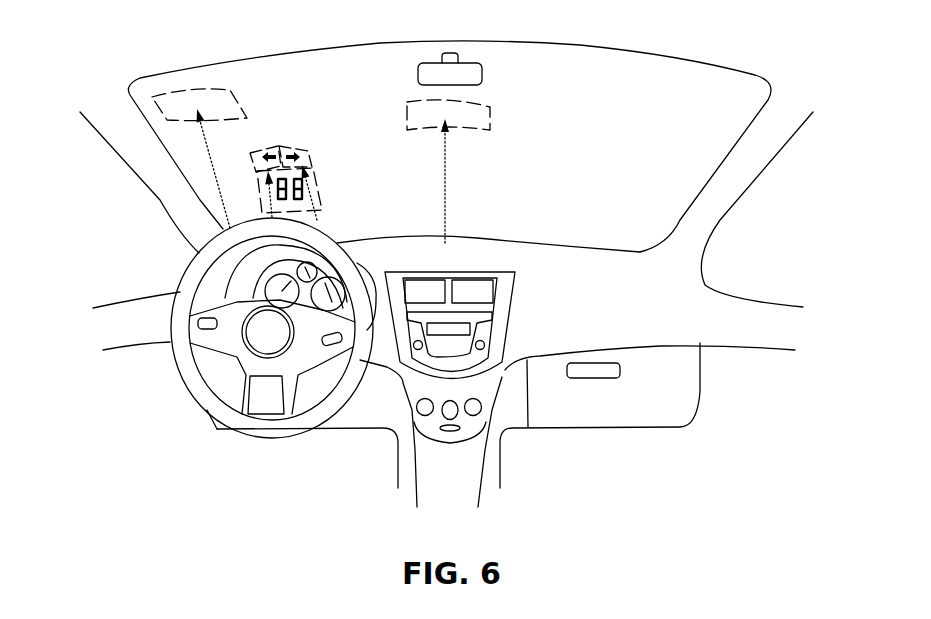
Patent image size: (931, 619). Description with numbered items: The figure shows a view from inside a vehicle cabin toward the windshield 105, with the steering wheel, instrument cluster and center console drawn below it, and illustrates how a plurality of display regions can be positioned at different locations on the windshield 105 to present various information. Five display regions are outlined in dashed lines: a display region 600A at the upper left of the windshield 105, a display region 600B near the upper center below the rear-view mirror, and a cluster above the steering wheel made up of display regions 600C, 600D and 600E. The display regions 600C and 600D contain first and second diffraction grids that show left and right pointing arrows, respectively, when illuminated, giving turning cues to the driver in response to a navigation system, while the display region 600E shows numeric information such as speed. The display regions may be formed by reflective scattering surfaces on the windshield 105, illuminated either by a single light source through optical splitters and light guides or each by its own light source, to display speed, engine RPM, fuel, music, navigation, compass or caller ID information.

The display region 600A is at (236, 96).
The display region 600B is at (490, 110).
The display region 600C is at (262, 146).
The display region 600D is at (308, 152).
The display region 600E is at (318, 195).
The windshield 105 is at (723, 102).